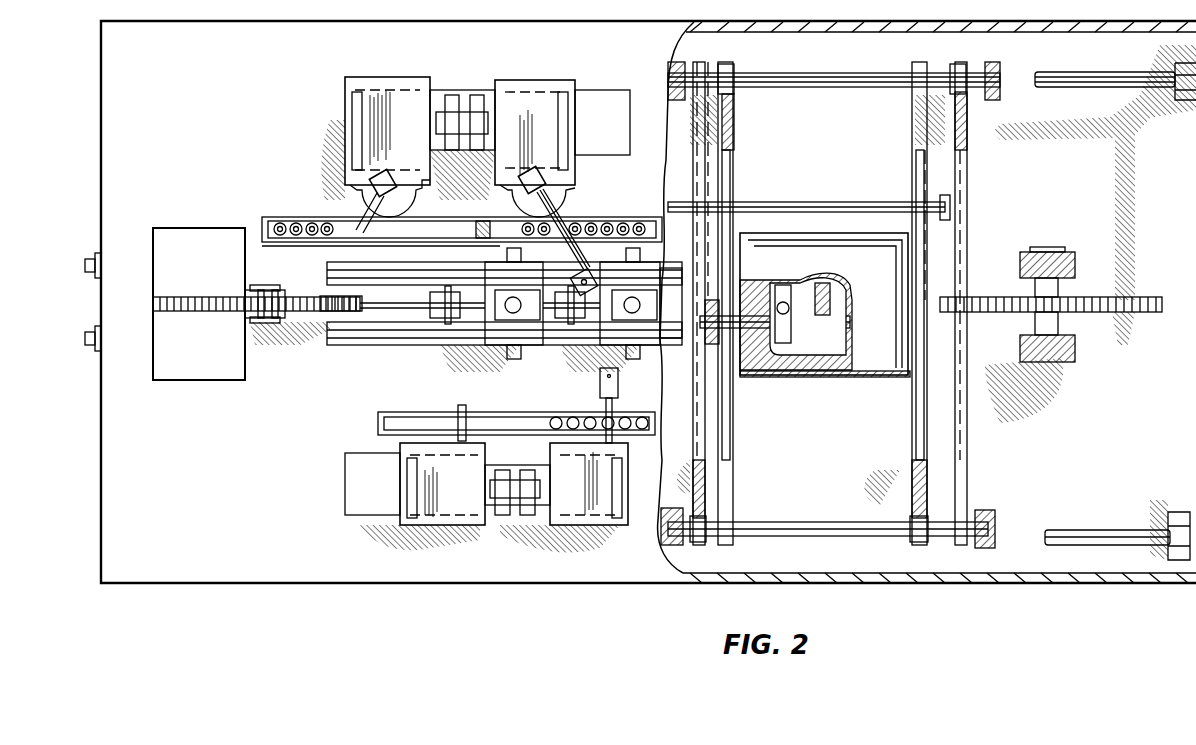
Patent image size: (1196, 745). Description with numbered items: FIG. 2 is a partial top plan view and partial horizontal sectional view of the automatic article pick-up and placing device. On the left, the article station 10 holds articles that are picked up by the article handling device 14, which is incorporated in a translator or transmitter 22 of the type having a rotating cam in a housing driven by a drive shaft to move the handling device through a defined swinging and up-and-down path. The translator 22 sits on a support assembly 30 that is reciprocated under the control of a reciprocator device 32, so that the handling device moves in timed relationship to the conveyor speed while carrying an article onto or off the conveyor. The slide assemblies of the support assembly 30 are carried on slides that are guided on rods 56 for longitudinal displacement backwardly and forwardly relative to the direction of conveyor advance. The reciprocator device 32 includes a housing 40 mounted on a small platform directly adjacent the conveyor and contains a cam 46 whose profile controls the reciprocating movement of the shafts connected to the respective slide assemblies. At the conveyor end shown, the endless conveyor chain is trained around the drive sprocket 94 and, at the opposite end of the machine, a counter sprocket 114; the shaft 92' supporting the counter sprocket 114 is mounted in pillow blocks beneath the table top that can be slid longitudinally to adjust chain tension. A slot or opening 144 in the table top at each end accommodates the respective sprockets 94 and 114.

The slot or opening 144 is at (184, 245).
The counter sprocket 114 is at (218, 297).
The shaft 92' is at (273, 288).
The station 10 is at (420, 217).
The article handling device 14 is at (583, 198).
The translator or transmitter 22 is at (518, 78).
The rods 56 is at (820, 74).
The support assembly 30 is at (768, 132).
The housing 40 is at (892, 351).
The cam 46 is at (800, 300).
The reciprocator device 32 is at (810, 386).
The drive sprocket 94 is at (1130, 297).